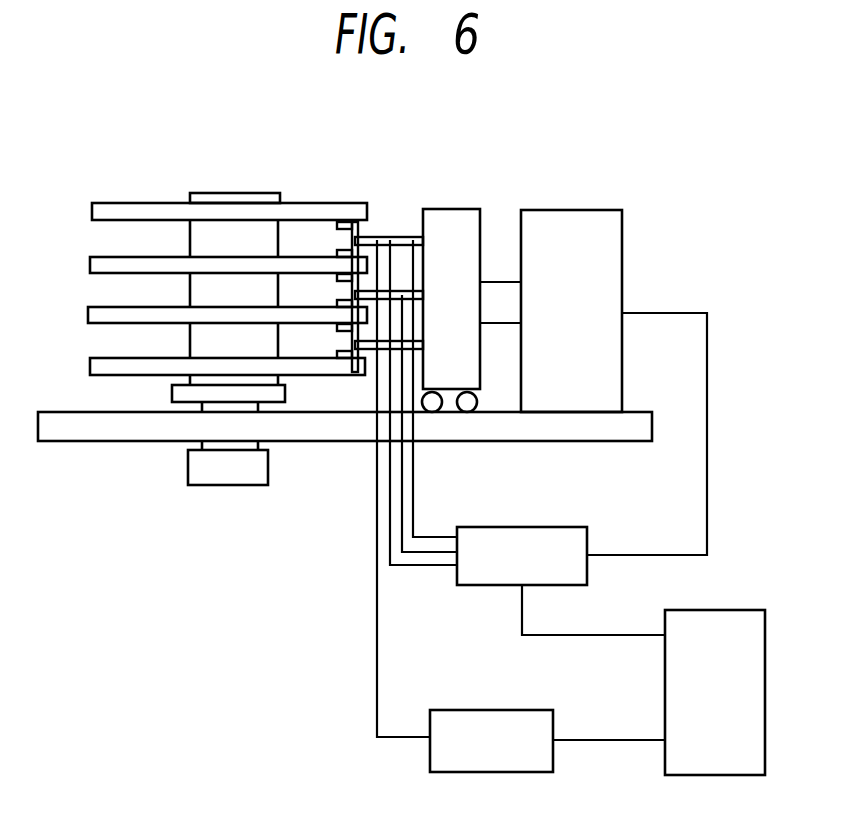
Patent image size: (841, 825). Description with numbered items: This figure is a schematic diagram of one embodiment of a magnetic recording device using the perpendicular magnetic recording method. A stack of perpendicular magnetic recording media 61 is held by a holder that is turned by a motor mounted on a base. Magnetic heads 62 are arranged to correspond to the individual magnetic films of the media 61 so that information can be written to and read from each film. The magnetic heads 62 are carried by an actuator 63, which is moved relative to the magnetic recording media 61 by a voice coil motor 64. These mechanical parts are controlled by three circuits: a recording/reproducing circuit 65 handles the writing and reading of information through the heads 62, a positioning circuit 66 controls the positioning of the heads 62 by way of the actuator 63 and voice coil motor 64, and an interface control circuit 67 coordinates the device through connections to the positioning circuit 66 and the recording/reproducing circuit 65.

The perpendicular magnetic recording media 61 is at (128, 208).
The magnetic heads 62 is at (336, 232).
The actuator 63 is at (452, 214).
The voice coil motor 64 is at (615, 240).
The recording/reproducing circuit 65 is at (500, 713).
The positioning circuit 66 is at (542, 530).
The interface control circuit 67 is at (760, 677).